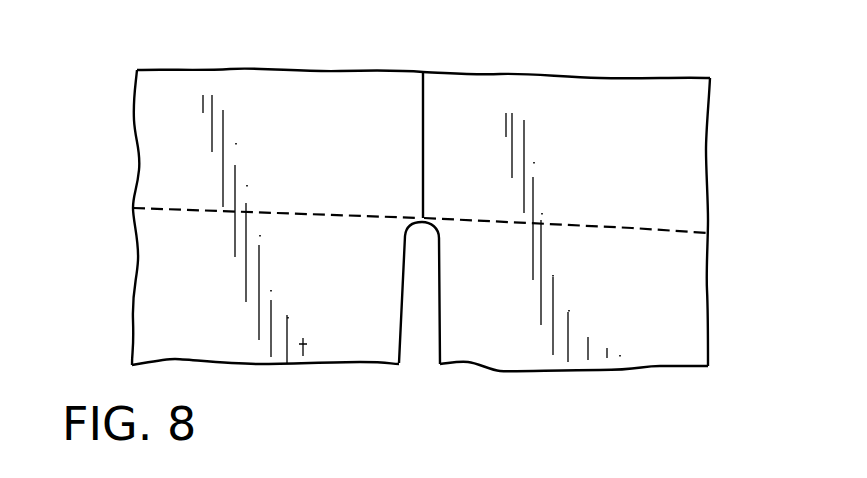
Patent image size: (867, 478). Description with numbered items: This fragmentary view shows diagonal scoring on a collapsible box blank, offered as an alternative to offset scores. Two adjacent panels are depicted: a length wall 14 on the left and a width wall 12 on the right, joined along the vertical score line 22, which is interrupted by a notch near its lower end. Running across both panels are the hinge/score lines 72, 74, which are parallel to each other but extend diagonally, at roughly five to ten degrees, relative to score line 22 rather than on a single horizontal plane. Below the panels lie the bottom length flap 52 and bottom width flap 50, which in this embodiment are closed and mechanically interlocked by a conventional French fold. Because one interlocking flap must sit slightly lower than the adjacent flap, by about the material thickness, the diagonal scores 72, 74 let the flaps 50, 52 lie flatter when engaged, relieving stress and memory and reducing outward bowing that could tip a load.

The length wall 14 is at (218, 88).
The width wall 12 is at (601, 103).
The score line 22 is at (425, 96).
The score line 72 is at (192, 213).
The score line 74 is at (632, 228).
The bottom length flap 52 is at (300, 341).
The bottom width flap 50 is at (568, 347).